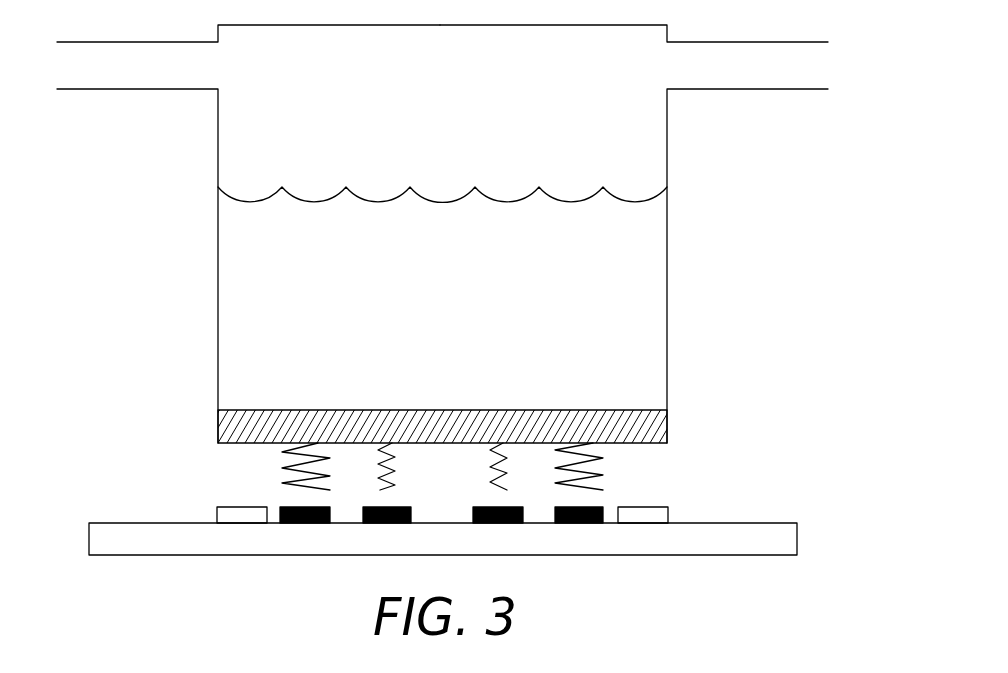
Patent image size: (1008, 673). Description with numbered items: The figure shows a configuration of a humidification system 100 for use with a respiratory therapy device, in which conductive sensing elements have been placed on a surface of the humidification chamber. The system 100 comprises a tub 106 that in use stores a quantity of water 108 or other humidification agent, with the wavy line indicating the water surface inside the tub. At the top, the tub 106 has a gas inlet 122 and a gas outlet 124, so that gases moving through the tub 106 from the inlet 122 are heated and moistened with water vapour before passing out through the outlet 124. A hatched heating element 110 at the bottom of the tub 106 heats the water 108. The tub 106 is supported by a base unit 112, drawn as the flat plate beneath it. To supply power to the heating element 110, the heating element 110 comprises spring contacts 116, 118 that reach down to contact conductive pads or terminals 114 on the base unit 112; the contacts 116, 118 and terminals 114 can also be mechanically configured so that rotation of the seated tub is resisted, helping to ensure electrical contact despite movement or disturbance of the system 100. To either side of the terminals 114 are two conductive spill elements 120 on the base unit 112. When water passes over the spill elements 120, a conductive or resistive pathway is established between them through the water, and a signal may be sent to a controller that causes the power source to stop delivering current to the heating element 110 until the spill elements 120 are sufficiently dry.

The humidification system 100 is at (202, 185).
The tub 106 is at (650, 155).
The water 108 is at (650, 268).
The heating element 110 is at (652, 425).
The base unit 112 is at (778, 538).
The conductive pads or terminals 114 is at (293, 523).
The spring contact 116 is at (282, 482).
The spring contact 118 is at (507, 490).
The conductive spill element 120 is at (227, 517).
The gas inlet 122 is at (105, 57).
The gas outlet 124 is at (720, 57).